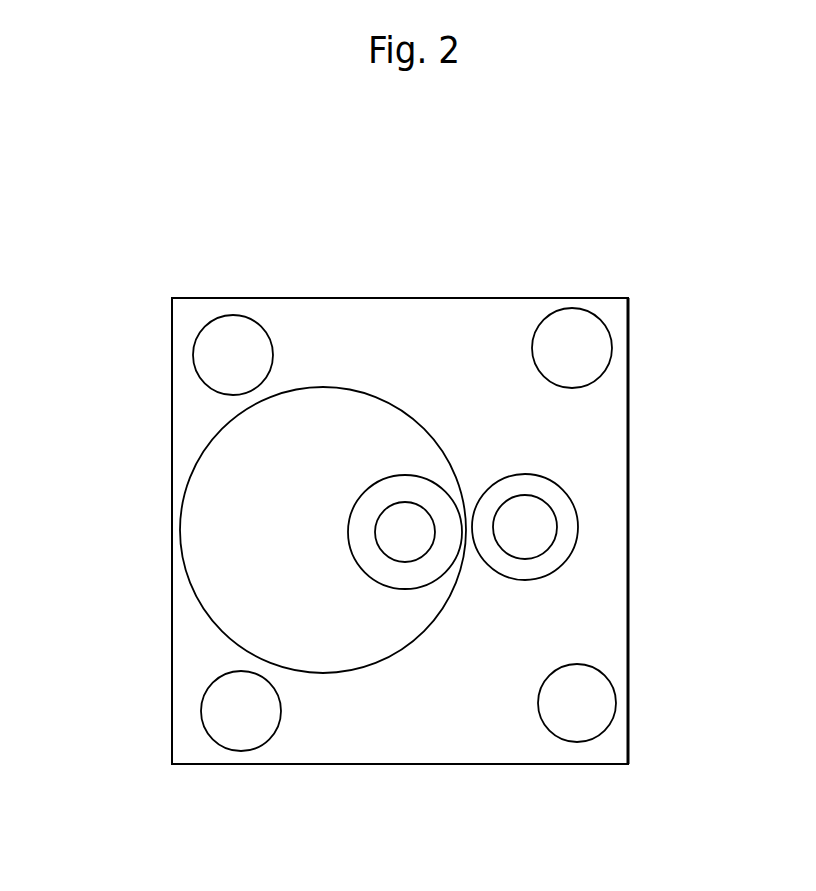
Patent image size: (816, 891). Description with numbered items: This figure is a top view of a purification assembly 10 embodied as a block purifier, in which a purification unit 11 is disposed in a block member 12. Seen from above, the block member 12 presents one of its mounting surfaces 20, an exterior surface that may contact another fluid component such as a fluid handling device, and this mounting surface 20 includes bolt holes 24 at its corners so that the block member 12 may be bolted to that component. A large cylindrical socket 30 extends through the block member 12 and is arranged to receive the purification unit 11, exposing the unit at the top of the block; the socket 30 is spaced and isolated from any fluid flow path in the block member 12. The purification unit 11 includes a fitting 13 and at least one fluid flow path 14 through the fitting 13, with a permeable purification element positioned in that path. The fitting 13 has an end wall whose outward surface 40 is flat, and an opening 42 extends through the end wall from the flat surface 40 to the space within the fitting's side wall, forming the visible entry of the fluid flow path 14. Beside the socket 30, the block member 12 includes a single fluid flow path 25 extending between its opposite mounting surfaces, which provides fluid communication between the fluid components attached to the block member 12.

The purification assembly 10 is at (520, 240).
The mounting surface 20 is at (428, 337).
The block member 12 is at (588, 457).
The bolt holes 24 is at (230, 347).
The flat surface of end wall 40 is at (235, 505).
The socket 30 is at (338, 673).
The fitting 13 is at (227, 563).
The purification unit 11 is at (285, 600).
The opening 42 is at (407, 522).
The fluid flow path 14 is at (412, 548).
The fluid flow path 25 is at (530, 517).